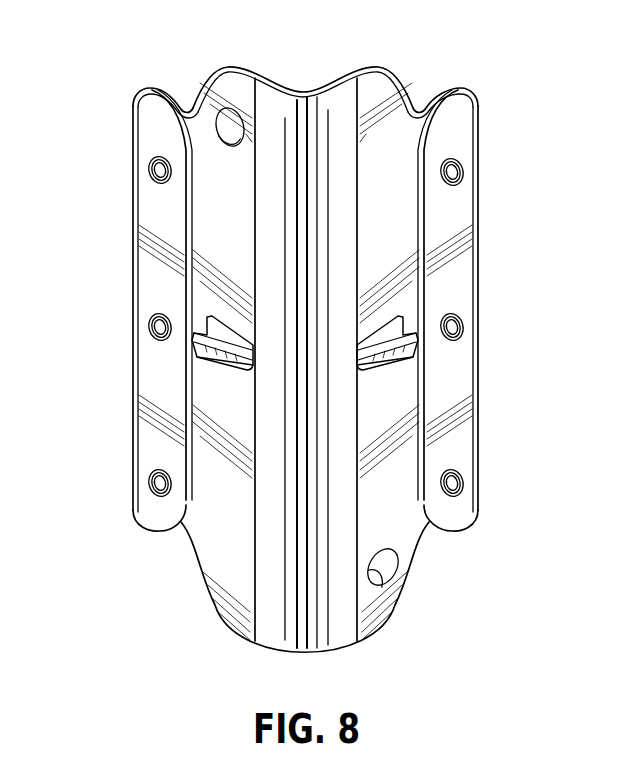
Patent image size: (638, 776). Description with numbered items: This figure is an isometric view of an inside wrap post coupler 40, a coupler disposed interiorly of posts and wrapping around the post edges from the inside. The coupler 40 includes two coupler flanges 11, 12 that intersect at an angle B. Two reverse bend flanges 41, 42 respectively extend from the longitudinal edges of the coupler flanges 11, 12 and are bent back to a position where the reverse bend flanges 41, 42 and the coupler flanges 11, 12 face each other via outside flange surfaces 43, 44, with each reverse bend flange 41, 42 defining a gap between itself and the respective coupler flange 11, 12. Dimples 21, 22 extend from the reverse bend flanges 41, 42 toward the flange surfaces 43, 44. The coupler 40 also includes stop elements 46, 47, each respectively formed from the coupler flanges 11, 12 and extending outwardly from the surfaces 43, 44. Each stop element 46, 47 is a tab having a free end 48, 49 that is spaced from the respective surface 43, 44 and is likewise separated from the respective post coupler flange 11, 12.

The inside wrap coupler 40 is at (116, 57).
The coupler flange 11 is at (428, 108).
The coupler flange 12 is at (184, 106).
The dimple 21 is at (462, 176).
The dimple 22 is at (150, 175).
The reverse bend flange 41 is at (457, 278).
The reverse bend flange 42 is at (153, 263).
The outside flange surface 43 is at (400, 207).
The outside flange surface 44 is at (238, 209).
The stop element 46 is at (386, 338).
The stop element 47 is at (222, 336).
The free end 48 is at (390, 366).
The free end 49 is at (236, 366).
The angle B is at (303, 655).